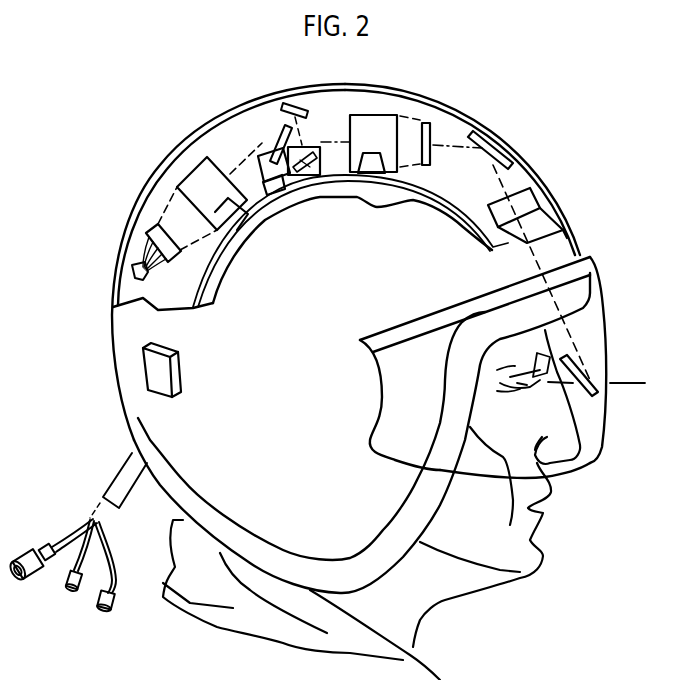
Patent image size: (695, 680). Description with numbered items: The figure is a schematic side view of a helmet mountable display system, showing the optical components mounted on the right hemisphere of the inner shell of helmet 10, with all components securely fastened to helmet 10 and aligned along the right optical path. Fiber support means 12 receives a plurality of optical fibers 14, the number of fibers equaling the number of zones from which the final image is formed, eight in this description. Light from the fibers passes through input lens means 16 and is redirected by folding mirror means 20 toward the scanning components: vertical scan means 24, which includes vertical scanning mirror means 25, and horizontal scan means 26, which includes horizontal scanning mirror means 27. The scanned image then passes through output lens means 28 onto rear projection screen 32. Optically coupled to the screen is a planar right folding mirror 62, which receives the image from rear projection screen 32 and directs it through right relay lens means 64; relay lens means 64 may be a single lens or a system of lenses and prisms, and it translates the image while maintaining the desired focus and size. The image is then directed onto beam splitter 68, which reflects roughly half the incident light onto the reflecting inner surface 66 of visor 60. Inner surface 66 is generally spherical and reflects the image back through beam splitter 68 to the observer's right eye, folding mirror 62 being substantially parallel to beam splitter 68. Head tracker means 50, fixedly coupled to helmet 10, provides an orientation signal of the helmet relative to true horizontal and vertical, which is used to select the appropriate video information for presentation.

The helmet 10 is at (222, 114).
The fiber support means 12 is at (148, 231).
The optical fibers 14 is at (135, 268).
The input lens means 16 is at (193, 164).
The folding mirror means 20 is at (300, 100).
The vertical scan means 24 is at (300, 186).
The vertical scanning mirror means 25 is at (330, 168).
The horizontal scan means 26 is at (267, 205).
The horizontal scanning mirror means 27 is at (274, 138).
The output lens means 28 is at (375, 115).
The rear projection screen 32 is at (433, 125).
The head tracker means 50 is at (137, 375).
The visor 60 is at (605, 319).
The right folding mirror 62 is at (500, 164).
The right relay lens means 64 is at (540, 203).
The inner surface of visor 66 is at (603, 349).
The beam splitter 68 is at (592, 398).